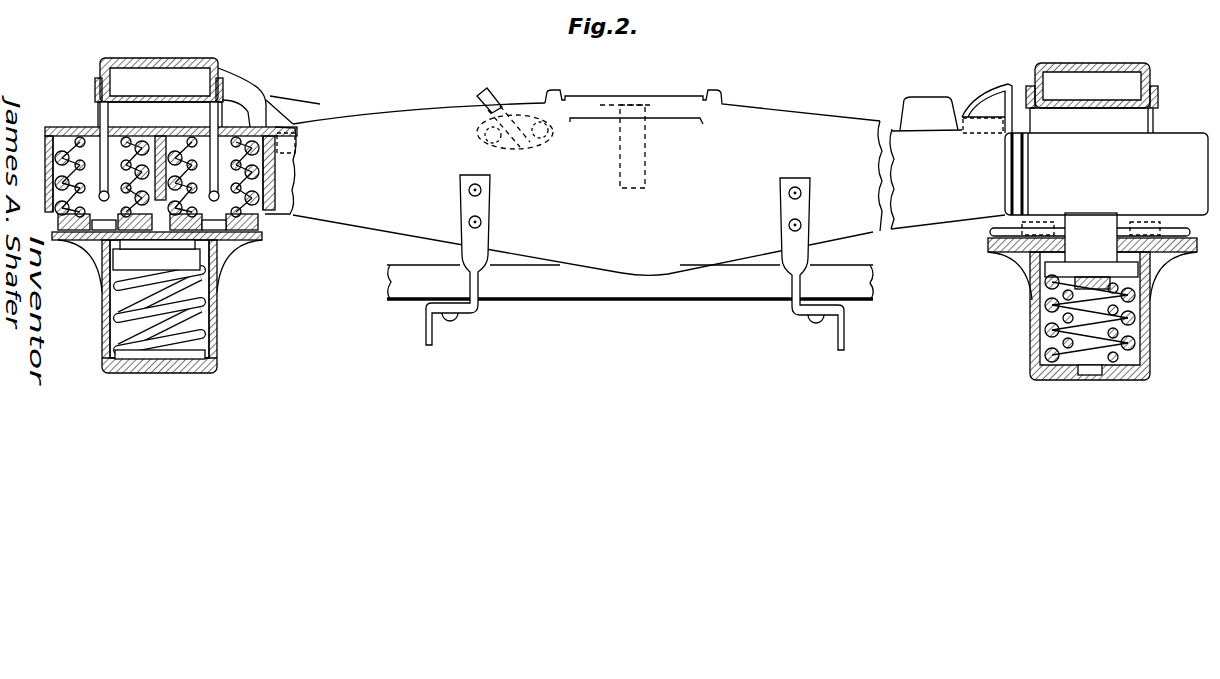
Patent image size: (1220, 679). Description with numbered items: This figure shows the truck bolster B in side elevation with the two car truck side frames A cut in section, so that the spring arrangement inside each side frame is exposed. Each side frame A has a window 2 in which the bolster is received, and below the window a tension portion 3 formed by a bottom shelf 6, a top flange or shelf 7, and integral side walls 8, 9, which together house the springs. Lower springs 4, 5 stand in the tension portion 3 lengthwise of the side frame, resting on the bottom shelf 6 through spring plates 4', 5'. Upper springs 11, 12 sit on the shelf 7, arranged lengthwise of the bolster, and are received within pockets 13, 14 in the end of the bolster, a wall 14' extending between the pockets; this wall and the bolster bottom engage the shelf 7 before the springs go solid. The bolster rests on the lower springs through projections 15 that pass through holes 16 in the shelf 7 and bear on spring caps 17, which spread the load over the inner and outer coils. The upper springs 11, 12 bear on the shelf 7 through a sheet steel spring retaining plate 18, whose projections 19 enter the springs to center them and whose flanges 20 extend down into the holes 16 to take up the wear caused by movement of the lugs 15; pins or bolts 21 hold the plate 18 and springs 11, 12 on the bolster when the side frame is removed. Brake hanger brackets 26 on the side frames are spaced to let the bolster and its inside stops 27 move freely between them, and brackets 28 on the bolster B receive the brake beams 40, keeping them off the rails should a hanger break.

The side frame A is at (203, 57).
The truck bolster B is at (652, 179).
The window 2 is at (105, 113).
The tension portion 3 is at (216, 346).
The spring 4 is at (223, 282).
The spring plate 4' is at (145, 377).
The spring 5 is at (1117, 318).
The spring plate 5' is at (1071, 390).
The bottom shelf 6 is at (143, 374).
The top flange or shelf 7 is at (240, 246).
The side wall 8 is at (110, 345).
The side wall 9 is at (216, 312).
The spring 11 is at (90, 204).
The spring 12 is at (276, 186).
The pocket 13 is at (60, 129).
The pocket 14 is at (247, 170).
The wall 14' is at (274, 95).
The projection 15 is at (150, 251).
The hole 16 is at (1158, 252).
The spring cap 17 is at (140, 284).
The spring retaining plate 18 is at (262, 228).
The projection 19 is at (68, 190).
The flange 20 is at (150, 262).
The pin or bolt 21 is at (210, 130).
The brake hanger bracket 26 is at (280, 122).
The inside stop 27 is at (1032, 176).
The bracket 28 is at (428, 333).
The brake beam 40 is at (647, 292).